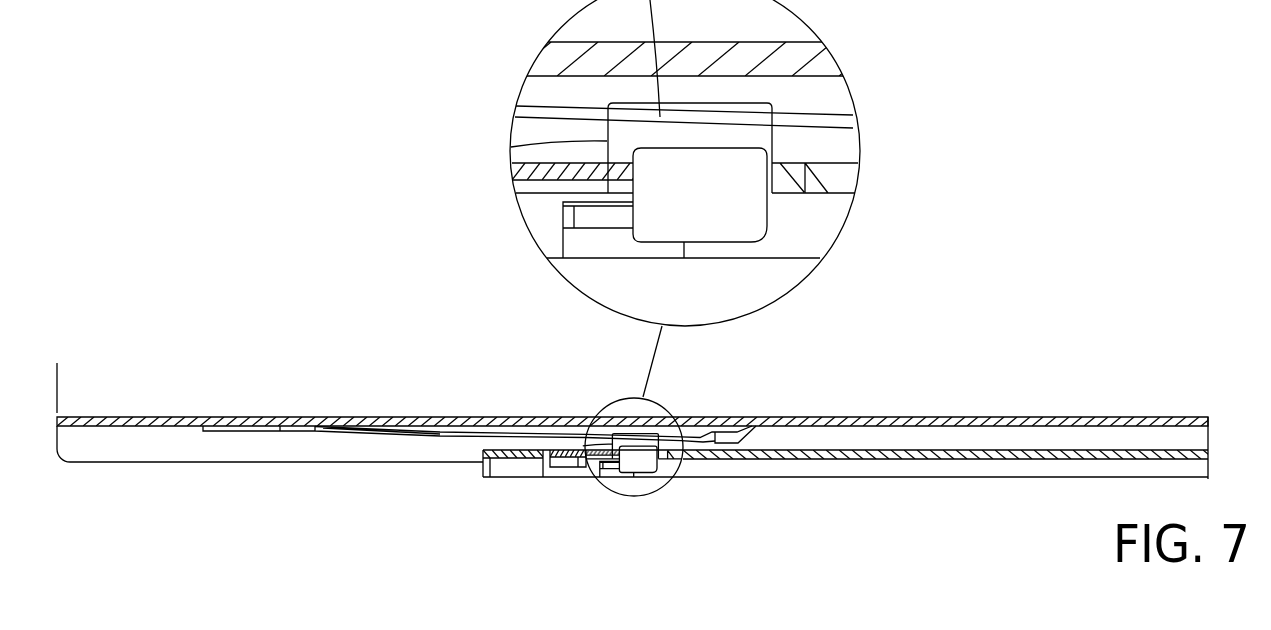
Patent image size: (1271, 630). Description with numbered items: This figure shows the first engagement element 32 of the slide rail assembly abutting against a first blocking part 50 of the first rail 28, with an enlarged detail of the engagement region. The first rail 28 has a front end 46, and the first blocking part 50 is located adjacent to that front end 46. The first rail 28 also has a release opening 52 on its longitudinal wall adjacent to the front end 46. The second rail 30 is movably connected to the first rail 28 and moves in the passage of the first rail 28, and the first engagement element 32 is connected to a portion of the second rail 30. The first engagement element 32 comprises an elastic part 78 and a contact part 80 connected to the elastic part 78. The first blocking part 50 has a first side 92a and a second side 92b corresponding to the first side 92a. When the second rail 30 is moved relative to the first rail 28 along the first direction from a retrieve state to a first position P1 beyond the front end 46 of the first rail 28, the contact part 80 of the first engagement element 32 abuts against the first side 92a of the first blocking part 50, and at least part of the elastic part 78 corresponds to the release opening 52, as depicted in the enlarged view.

The first rail 28 is at (1003, 470).
The second rail 30 is at (1061, 408).
The first engagement element 32 is at (367, 447).
The front end 46 is at (518, 458).
The first blocking part 50 is at (760, 143).
The release opening 52 is at (768, 180).
The elastic part 78 is at (472, 431).
The contact part 80 is at (790, 122).
The first side 92a is at (773, 137).
The second side 92b is at (511, 147).
The first position P1 is at (58, 376).